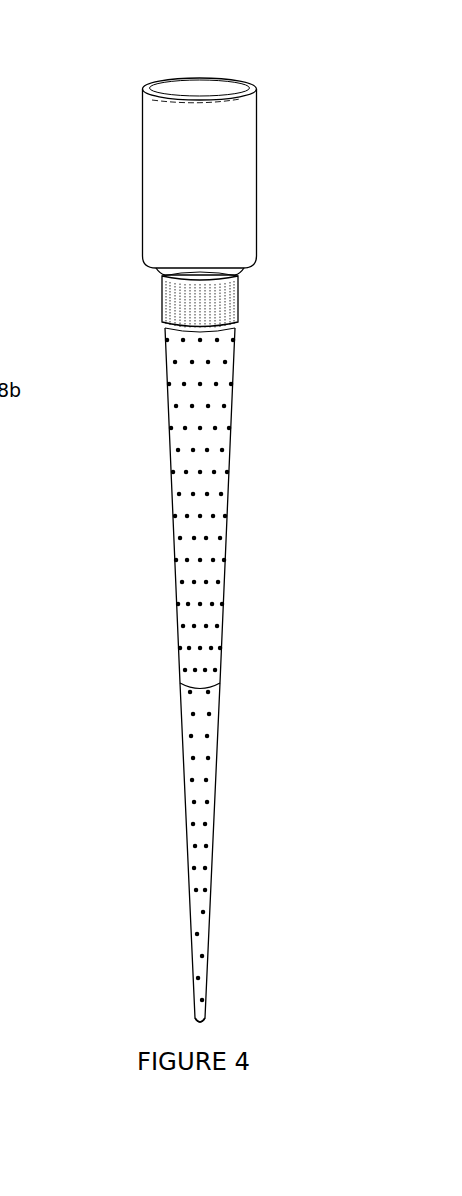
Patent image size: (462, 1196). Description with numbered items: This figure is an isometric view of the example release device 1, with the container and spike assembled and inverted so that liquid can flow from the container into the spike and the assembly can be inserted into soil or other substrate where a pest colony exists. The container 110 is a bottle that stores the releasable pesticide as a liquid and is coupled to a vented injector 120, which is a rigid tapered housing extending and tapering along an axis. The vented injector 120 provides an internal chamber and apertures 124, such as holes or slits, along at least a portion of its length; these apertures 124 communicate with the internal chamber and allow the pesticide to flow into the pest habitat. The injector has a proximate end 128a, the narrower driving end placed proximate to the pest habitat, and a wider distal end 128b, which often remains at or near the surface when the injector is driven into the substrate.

The release device 1 is at (119, 41).
The container 110 is at (143, 128).
The vented injector 120 is at (252, 520).
The apertures 124 is at (188, 634).
The proximate end 128a is at (220, 1018).
The distal end 128b is at (259, 295).